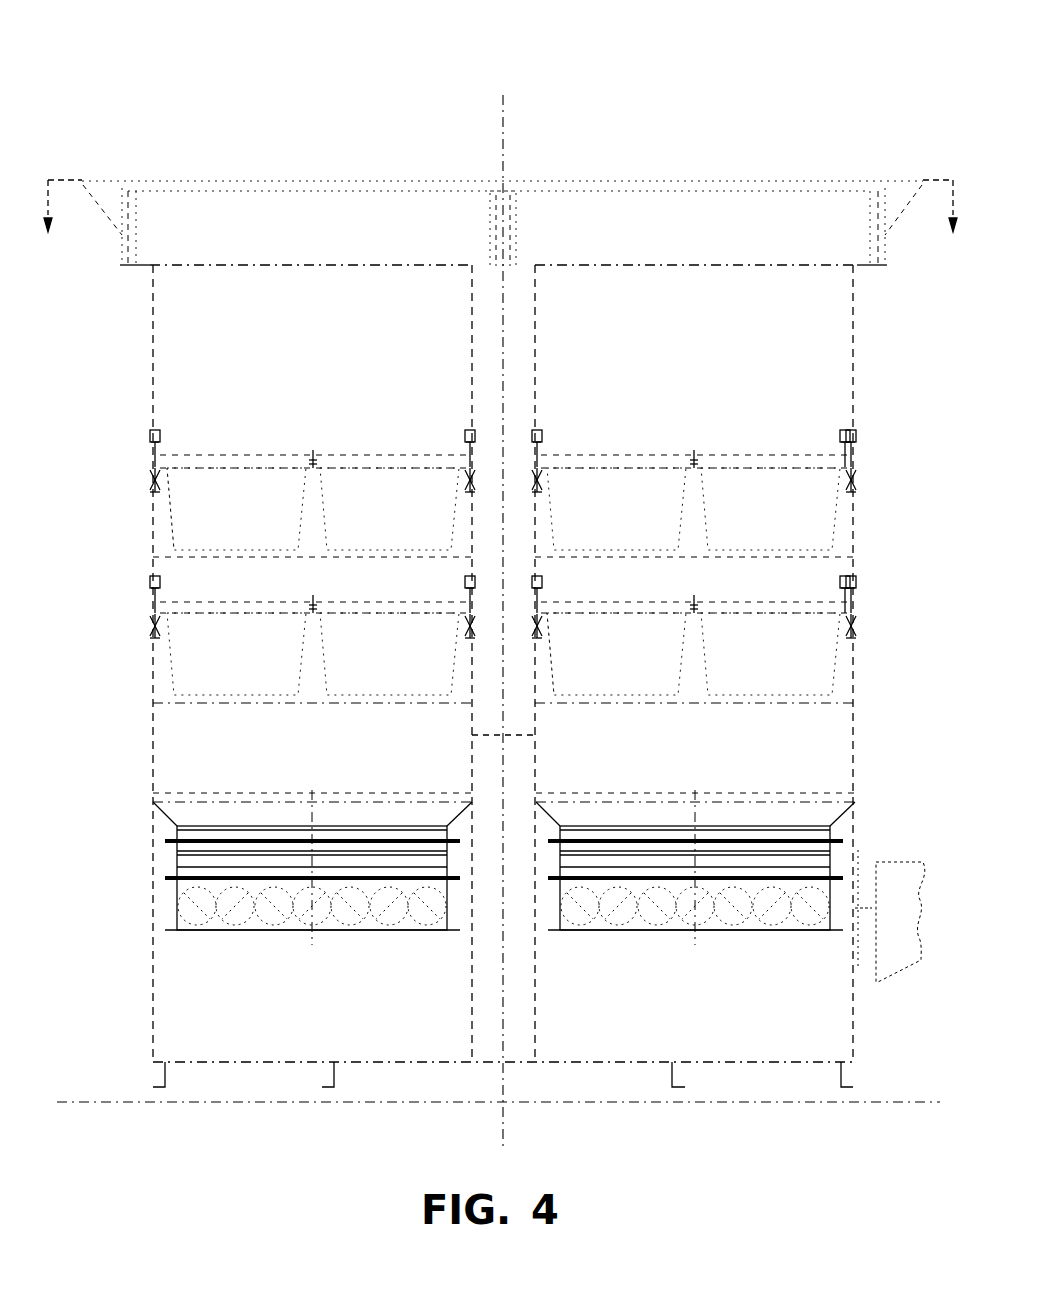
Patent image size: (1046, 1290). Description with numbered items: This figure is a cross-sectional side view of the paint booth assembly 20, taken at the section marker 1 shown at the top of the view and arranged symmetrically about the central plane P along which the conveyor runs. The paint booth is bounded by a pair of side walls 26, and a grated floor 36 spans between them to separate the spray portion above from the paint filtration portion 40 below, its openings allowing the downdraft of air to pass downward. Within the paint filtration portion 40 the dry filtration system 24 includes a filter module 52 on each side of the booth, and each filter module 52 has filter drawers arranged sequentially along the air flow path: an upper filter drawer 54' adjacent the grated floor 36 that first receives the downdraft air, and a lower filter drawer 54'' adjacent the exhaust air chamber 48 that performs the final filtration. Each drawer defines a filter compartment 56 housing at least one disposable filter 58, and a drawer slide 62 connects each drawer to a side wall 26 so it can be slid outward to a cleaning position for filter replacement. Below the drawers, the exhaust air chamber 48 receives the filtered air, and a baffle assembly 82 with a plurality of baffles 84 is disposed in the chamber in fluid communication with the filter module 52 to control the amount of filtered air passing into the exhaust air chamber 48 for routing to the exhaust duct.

The paint booth assembly 20 is at (846, 100).
The grated floor 36 is at (733, 178).
The dry filtration system 24 is at (864, 368).
The side walls 26 is at (151, 400).
The paint filtration portion 40 is at (212, 347).
The filter module 52 is at (151, 548).
The upper filter drawer 54' is at (453, 500).
The lower filter drawer 54'' is at (446, 649).
The disposable filter 58 is at (172, 500).
The filter compartment 56 is at (468, 445).
The drawer slide 62 is at (151, 585).
The baffle assembly 82 is at (168, 858).
The baffles 84 is at (177, 900).
The exhaust air chamber 48 is at (208, 1012).
The central plane P is at (504, 611).
The section line 1 is at (500, 226).